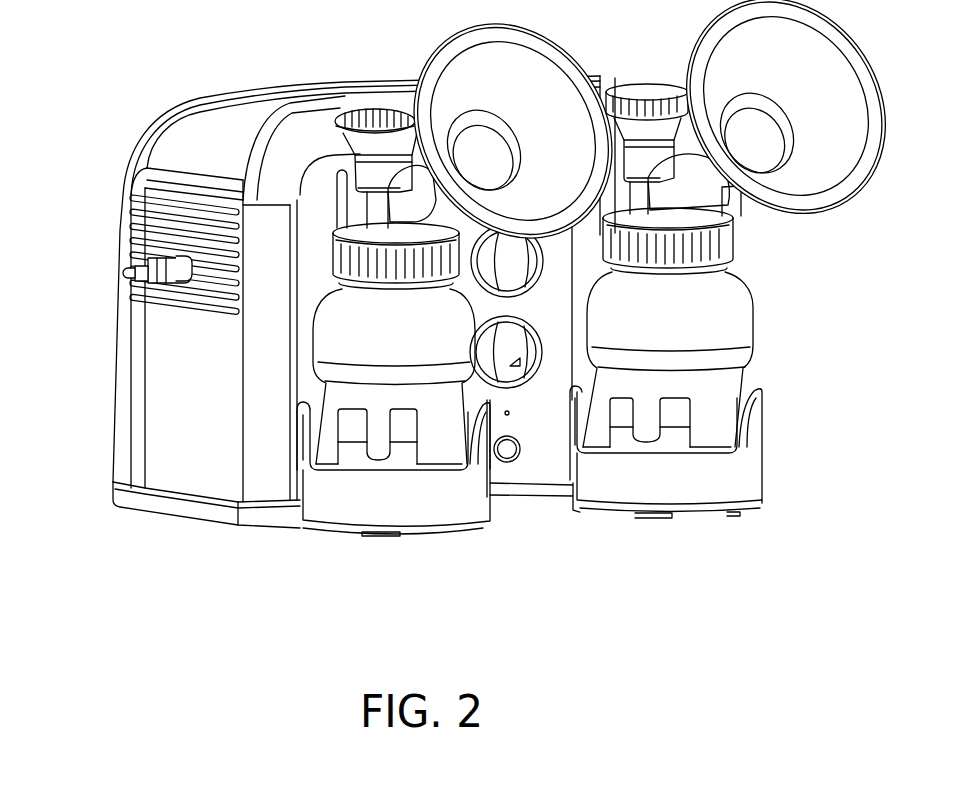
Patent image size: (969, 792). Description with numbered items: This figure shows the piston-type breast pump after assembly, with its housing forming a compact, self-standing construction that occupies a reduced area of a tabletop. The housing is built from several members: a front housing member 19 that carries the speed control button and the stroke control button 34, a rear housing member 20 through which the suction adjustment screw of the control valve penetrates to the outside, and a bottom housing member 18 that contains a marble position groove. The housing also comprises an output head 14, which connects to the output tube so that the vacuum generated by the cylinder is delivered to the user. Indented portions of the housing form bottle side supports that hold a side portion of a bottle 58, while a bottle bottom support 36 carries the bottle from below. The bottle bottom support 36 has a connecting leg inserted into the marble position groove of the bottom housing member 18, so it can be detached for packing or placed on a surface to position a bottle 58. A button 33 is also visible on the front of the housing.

The output head 14 is at (137, 265).
The bottom housing member 18 is at (157, 503).
The front housing member 19 is at (213, 473).
The rear housing member 20 is at (132, 392).
The power button 33 is at (510, 451).
The stroke control button 34 is at (517, 367).
The bottle bottom support 36 is at (435, 498).
The bottle 58 is at (700, 316).